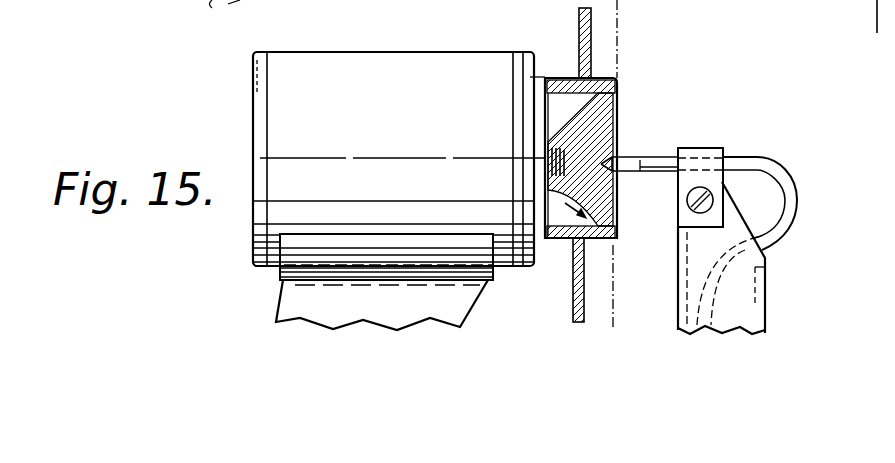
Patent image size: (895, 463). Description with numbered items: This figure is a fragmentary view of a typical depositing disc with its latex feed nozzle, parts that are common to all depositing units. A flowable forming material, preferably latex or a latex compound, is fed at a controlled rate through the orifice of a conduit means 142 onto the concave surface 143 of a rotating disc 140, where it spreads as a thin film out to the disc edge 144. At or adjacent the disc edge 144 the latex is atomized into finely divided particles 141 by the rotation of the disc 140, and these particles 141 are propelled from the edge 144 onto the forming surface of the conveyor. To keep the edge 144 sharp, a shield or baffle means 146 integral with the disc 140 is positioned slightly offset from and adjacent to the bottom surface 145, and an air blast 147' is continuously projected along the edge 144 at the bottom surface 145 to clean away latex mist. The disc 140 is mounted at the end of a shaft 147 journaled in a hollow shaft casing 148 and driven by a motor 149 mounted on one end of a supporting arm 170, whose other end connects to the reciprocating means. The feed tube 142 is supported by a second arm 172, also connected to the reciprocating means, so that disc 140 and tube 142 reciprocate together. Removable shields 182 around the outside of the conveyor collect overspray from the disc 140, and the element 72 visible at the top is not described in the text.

The motor 149 is at (276, 90).
The supporting arm 170 is at (283, 303).
The hollow shaft casing 148 is at (537, 127).
The rotating disc 140 is at (612, 108).
The bottom surface of the disc 145 is at (572, 118).
The concave surface 143 is at (614, 143).
The shaft 147 is at (502, 157).
The air blast 147' is at (509, 197).
The disc edge 144 is at (618, 232).
The finely divided particles 141 is at (627, 2).
The baffle means 146 is at (574, 302).
The conduit means 142 is at (788, 205).
The second arm 172 is at (740, 305).
The removable shields 182 is at (345, 0).
The element 72 is at (827, 0).